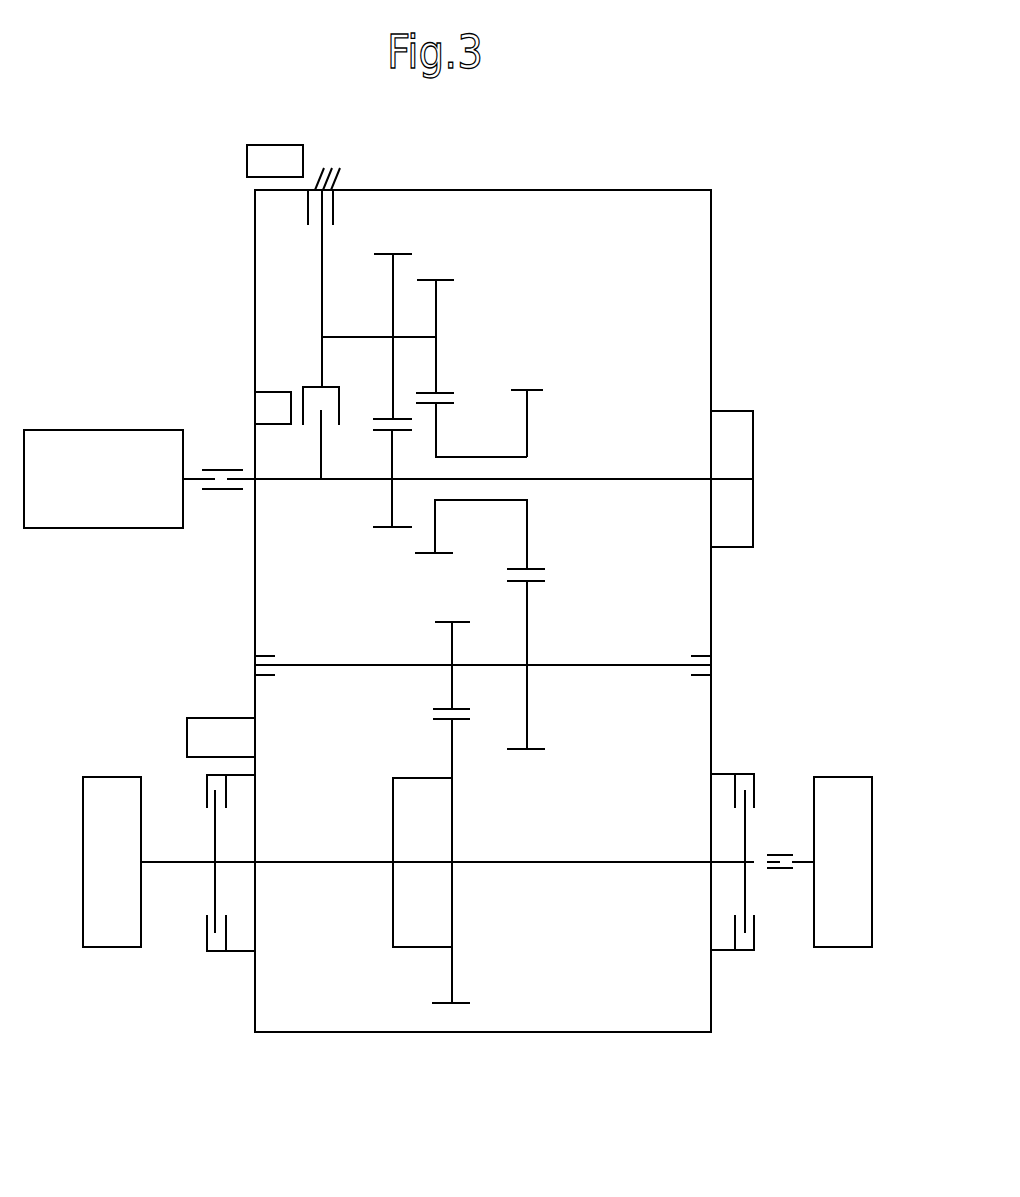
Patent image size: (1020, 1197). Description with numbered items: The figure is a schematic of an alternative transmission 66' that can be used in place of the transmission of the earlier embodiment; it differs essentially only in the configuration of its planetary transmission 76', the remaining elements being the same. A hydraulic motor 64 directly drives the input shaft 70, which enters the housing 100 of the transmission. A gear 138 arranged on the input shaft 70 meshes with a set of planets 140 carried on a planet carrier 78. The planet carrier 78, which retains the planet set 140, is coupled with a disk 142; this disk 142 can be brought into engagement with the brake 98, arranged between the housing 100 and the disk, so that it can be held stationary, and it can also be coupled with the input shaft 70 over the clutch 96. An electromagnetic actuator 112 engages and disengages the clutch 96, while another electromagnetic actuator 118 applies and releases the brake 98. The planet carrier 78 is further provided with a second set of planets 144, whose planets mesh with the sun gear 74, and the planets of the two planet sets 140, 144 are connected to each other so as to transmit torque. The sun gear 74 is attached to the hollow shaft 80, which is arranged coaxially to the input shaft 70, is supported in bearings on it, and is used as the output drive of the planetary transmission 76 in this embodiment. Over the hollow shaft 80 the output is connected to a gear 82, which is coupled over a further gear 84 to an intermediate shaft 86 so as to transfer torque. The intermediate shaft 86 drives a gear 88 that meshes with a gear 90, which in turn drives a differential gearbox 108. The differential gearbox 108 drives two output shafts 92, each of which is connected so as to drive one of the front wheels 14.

The front wheels 14 is at (94, 854).
The hydraulic motor 64 is at (87, 494).
The transmission 66' is at (806, 205).
The input shaft 70 is at (610, 479).
The sun gear 74 is at (435, 522).
The planetary transmission 76 is at (390, 602).
The planetary transmission 76' is at (599, 301).
The planet carrier 78 is at (454, 325).
The hollow shaft 80 is at (480, 457).
The gear 82 is at (527, 422).
The gear 84 is at (527, 637).
The intermediate shaft 86 is at (328, 665).
The gear 88 is at (452, 683).
The gear 90 is at (452, 753).
The output shafts 92 is at (290, 862).
The clutch 96 is at (312, 385).
The brake 98 is at (337, 208).
The housing 100 is at (642, 190).
The differential gearbox 108 is at (417, 933).
The electromagnetic actuator 112 is at (267, 410).
The electromagnetic actuator 118 is at (262, 163).
The gear 138 is at (392, 503).
The set of planets 140 is at (393, 277).
The disk 142 is at (322, 270).
The second set of planets 144 is at (437, 300).